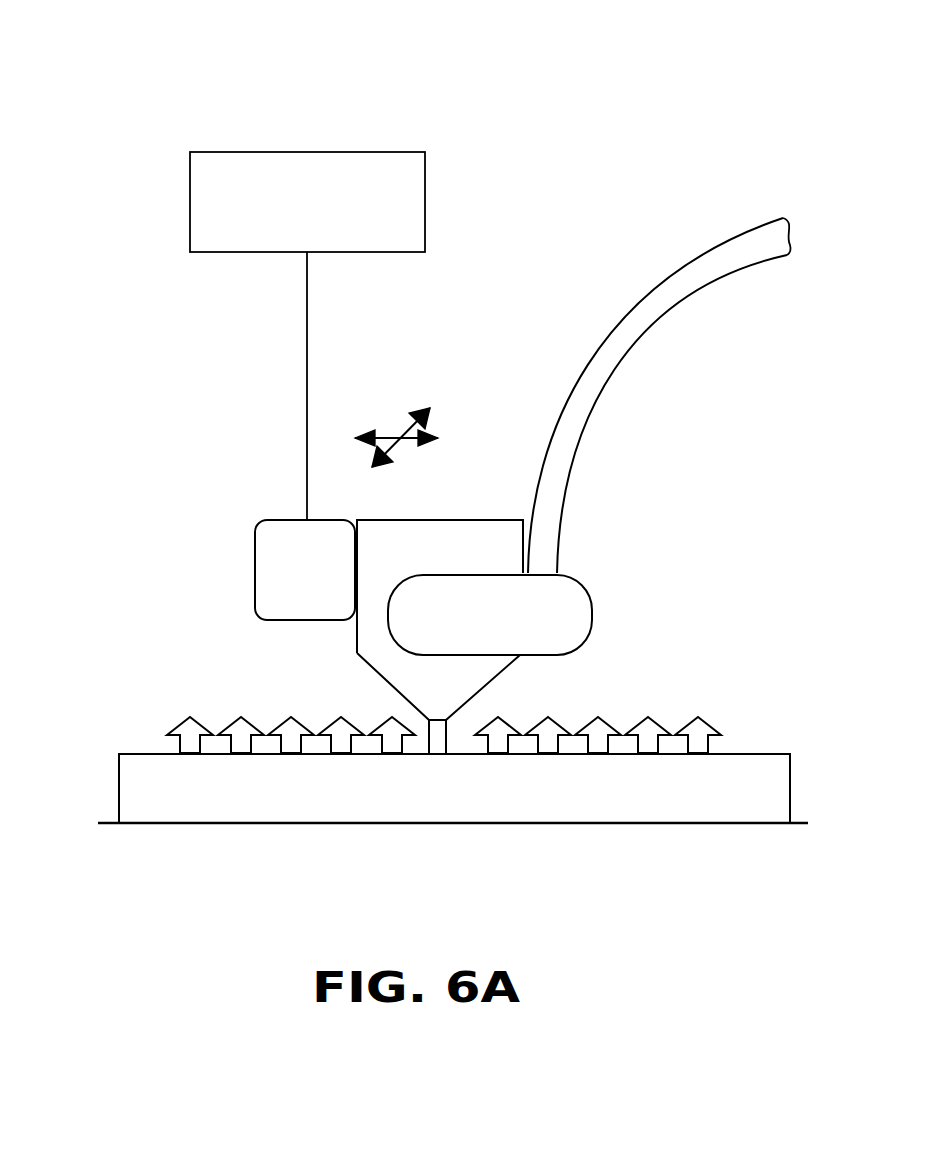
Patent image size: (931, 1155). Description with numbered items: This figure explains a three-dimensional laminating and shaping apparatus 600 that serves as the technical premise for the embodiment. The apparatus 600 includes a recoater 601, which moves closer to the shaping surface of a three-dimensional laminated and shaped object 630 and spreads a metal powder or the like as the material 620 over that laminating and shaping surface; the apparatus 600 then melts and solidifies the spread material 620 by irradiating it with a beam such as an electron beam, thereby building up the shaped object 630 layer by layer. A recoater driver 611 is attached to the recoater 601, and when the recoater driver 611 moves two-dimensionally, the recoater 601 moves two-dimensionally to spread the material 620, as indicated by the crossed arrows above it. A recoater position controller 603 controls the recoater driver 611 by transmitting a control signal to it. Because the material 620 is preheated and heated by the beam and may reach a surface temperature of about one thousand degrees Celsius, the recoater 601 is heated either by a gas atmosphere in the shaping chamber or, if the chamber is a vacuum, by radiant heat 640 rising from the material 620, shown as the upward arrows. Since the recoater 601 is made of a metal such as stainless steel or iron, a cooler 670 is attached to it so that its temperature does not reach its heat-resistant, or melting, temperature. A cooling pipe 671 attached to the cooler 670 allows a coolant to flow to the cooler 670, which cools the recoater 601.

The three-dimensional laminating and shaping apparatus 600 is at (232, 68).
The recoater position controller 603 is at (190, 200).
The recoater driver 611 is at (273, 518).
The recoater 601 is at (417, 519).
The material 620 is at (448, 733).
The cooler 670 is at (592, 618).
The cooling pipe 671 is at (618, 360).
The radiant heat 640 is at (285, 718).
The three-dimensional laminated and shaped object 630 is at (130, 788).